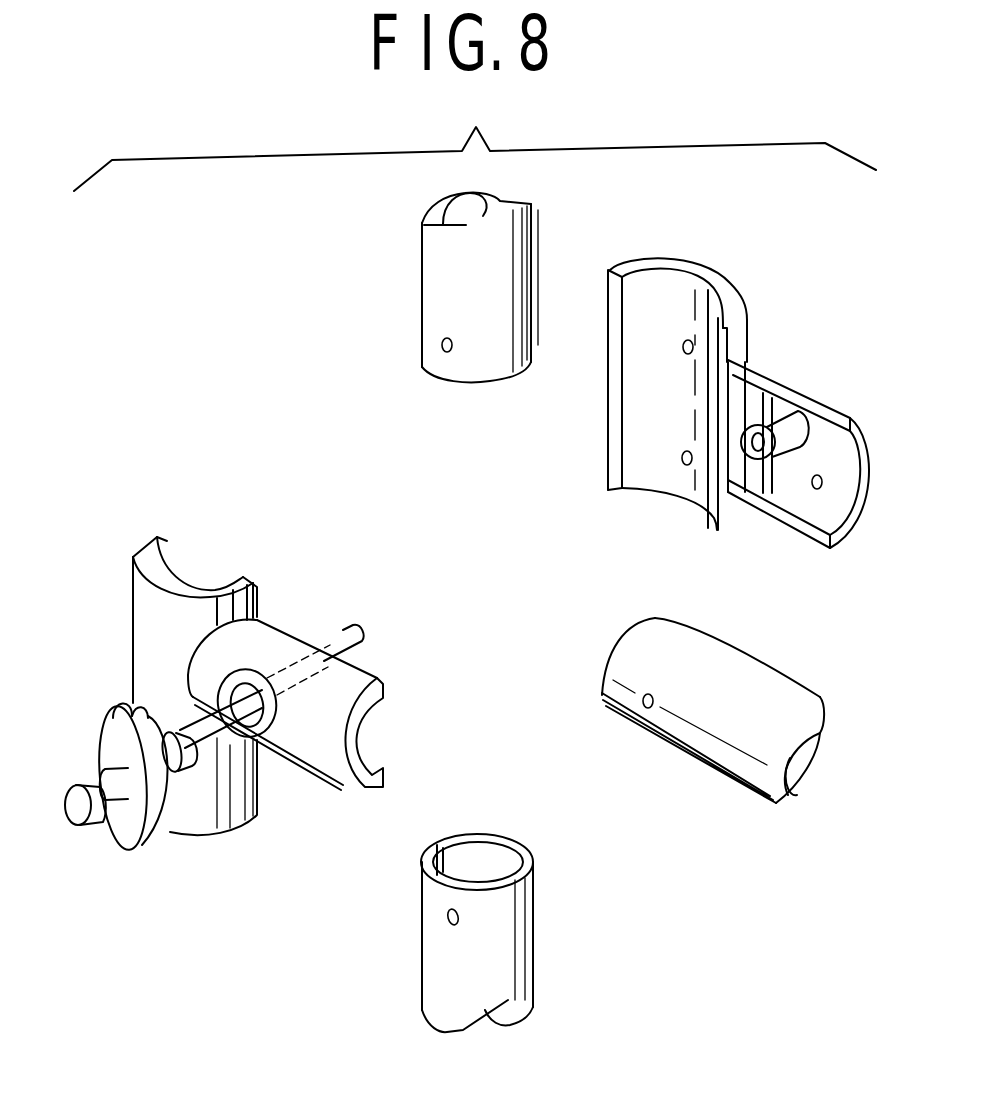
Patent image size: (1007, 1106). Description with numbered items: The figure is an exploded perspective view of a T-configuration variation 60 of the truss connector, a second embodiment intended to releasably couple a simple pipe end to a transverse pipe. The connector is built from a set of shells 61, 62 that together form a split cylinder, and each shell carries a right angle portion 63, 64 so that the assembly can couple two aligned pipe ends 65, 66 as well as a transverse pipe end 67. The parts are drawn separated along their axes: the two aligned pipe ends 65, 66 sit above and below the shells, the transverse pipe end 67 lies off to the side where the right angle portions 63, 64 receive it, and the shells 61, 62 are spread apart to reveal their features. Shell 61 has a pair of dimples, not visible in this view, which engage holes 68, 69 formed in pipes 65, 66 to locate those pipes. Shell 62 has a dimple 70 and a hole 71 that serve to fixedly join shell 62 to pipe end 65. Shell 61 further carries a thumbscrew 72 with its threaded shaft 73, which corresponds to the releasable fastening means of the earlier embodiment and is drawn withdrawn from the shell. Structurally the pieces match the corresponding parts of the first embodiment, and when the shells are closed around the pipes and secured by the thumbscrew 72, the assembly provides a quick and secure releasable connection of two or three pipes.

The T-configuration variation 60 is at (300, 420).
The shell 61 is at (148, 600).
The shell 62 is at (727, 283).
The right angle portion 63 is at (323, 720).
The right angle portion 64 is at (867, 512).
The pipe end 65 is at (466, 257).
The pipe end 66 is at (490, 957).
The transverse pipe end 67 is at (762, 715).
The hole 68 is at (437, 353).
The hole 69 is at (455, 920).
The dimple 70 is at (680, 468).
The hole 71 is at (673, 352).
The thumbscrew 72 is at (77, 813).
The threaded shaft 73 is at (203, 730).